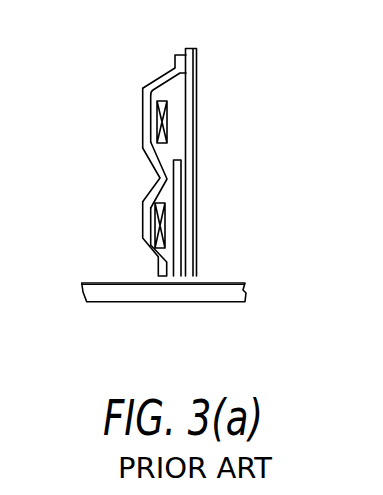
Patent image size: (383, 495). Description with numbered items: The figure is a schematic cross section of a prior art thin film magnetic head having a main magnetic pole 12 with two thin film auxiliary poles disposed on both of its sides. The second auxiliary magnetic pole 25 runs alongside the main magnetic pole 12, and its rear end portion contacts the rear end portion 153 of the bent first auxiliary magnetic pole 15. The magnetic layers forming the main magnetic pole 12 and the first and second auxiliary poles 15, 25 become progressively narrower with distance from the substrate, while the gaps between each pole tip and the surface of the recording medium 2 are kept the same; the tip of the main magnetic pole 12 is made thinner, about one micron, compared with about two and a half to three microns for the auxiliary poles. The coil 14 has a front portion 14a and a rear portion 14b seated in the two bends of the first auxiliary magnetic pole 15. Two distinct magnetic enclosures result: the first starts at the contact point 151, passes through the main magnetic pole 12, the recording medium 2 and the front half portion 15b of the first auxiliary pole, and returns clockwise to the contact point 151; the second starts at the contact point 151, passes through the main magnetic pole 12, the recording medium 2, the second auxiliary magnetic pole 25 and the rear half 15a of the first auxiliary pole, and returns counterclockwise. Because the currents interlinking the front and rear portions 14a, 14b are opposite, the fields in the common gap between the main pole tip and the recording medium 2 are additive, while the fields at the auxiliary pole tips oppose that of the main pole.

The recording medium 2 is at (235, 283).
The main magnetic pole 12 is at (177, 223).
The coil 14 is at (256, 178).
The front portion of the coil 14a is at (168, 126).
The rear portion of the coil 14b is at (230, 229).
The first auxiliary magnetic pole 15 is at (114, 150).
The rear half of the first auxiliary magnetic pole 15a is at (143, 125).
The front half portion of the first auxiliary magnetic pole 15b is at (129, 239).
The contact point 151 is at (154, 168).
The rear end portion of the first auxiliary magnetic pole 153 is at (175, 56).
The second auxiliary magnetic pole 25 is at (197, 183).